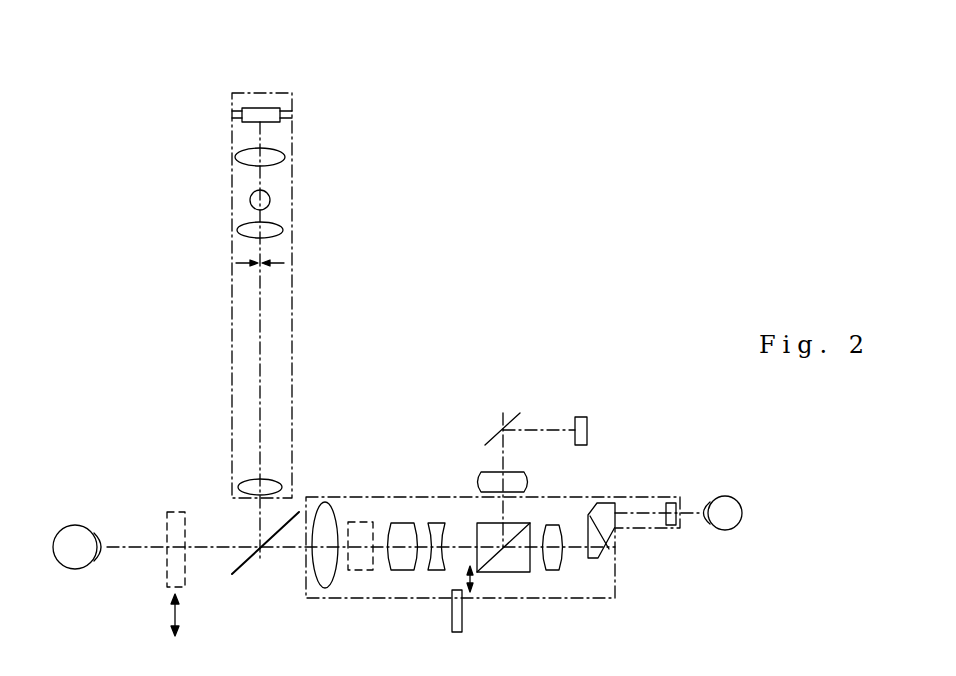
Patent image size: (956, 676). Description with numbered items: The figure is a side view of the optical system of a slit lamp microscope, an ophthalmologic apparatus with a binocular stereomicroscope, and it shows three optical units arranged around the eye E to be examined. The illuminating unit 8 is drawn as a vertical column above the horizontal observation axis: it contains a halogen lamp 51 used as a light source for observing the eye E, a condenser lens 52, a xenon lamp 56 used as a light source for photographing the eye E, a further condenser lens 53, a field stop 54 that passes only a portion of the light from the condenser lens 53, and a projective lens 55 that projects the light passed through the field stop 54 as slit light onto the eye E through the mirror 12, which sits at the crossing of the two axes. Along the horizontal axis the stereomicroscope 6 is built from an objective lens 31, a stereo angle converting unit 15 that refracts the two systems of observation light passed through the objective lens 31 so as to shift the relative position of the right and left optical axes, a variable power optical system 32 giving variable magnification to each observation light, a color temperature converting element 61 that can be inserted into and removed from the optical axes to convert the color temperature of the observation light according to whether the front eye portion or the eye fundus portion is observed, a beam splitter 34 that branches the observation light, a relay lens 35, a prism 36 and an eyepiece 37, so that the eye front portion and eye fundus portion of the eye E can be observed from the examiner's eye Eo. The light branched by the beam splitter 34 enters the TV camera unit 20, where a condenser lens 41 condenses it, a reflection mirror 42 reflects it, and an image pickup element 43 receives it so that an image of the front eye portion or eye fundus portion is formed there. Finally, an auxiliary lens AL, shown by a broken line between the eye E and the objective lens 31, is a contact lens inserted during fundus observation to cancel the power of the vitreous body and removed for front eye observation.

The illuminating unit 8 is at (232, 290).
The halogen lamp 51 is at (272, 108).
The condenser lens 52 is at (268, 150).
The xenon lamp 56 is at (270, 200).
The condenser lens 53 is at (268, 225).
The field stop 54 is at (286, 264).
The projective lens 55 is at (250, 484).
The eye to be examined E is at (85, 568).
The auxiliary lens AL is at (167, 515).
The mirror 12 is at (250, 564).
The stereomicroscope 6 is at (540, 598).
The objective lens 31 is at (325, 500).
The stereo angle converting unit 15 is at (368, 572).
The variable power optical system 32 is at (418, 513).
The beam splitter 34 is at (503, 573).
The color temperature converting element 61 is at (452, 620).
The relay lens 35 is at (560, 572).
The prism 36 is at (600, 559).
The eyepiece 37 is at (670, 527).
The examiner's eye Eo is at (723, 497).
The TV camera unit 20 is at (560, 388).
The condenser lens 41 is at (527, 482).
The reflection mirror 42 is at (515, 417).
The image pickup element 43 is at (588, 422).